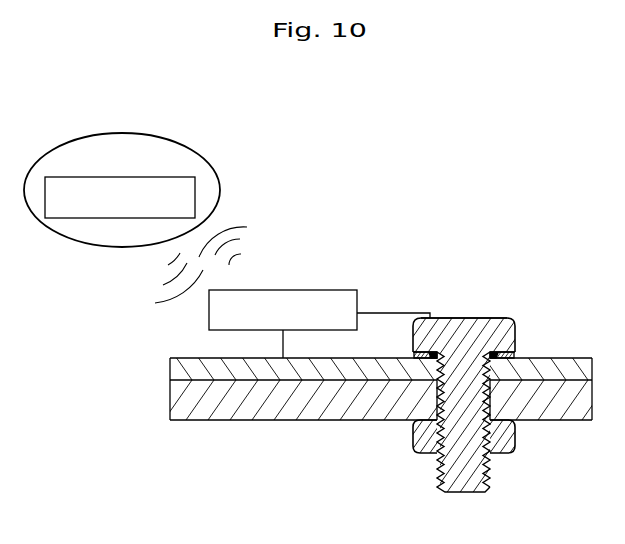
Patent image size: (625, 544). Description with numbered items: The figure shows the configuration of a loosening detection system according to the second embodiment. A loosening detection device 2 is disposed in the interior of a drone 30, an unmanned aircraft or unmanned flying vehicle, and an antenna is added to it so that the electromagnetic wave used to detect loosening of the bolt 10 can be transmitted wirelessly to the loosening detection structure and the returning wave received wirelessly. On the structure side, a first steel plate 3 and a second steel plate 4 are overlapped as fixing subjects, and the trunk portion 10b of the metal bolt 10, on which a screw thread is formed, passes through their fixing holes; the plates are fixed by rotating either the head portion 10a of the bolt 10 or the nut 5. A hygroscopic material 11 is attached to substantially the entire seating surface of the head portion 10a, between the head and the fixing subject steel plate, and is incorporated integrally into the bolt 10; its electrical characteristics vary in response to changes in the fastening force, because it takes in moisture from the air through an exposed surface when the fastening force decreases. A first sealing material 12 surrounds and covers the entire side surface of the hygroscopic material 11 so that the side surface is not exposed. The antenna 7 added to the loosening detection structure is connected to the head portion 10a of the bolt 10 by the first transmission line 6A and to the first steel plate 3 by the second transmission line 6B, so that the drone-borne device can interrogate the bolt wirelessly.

The drone 30 is at (165, 132).
The loosening detection device 2 is at (175, 177).
The antenna 7 is at (285, 290).
The second transmission line 6B is at (285, 346).
The first transmission line 6A is at (405, 312).
The first steel plate 3 is at (170, 364).
The second steel plate 4 is at (170, 397).
The bolt 10 is at (451, 386).
The head portion 10a is at (507, 318).
The trunk portion 10b is at (486, 462).
The hygroscopic material 11 is at (415, 353).
The first sealing material 12 is at (414, 354).
The nut 5 is at (515, 432).